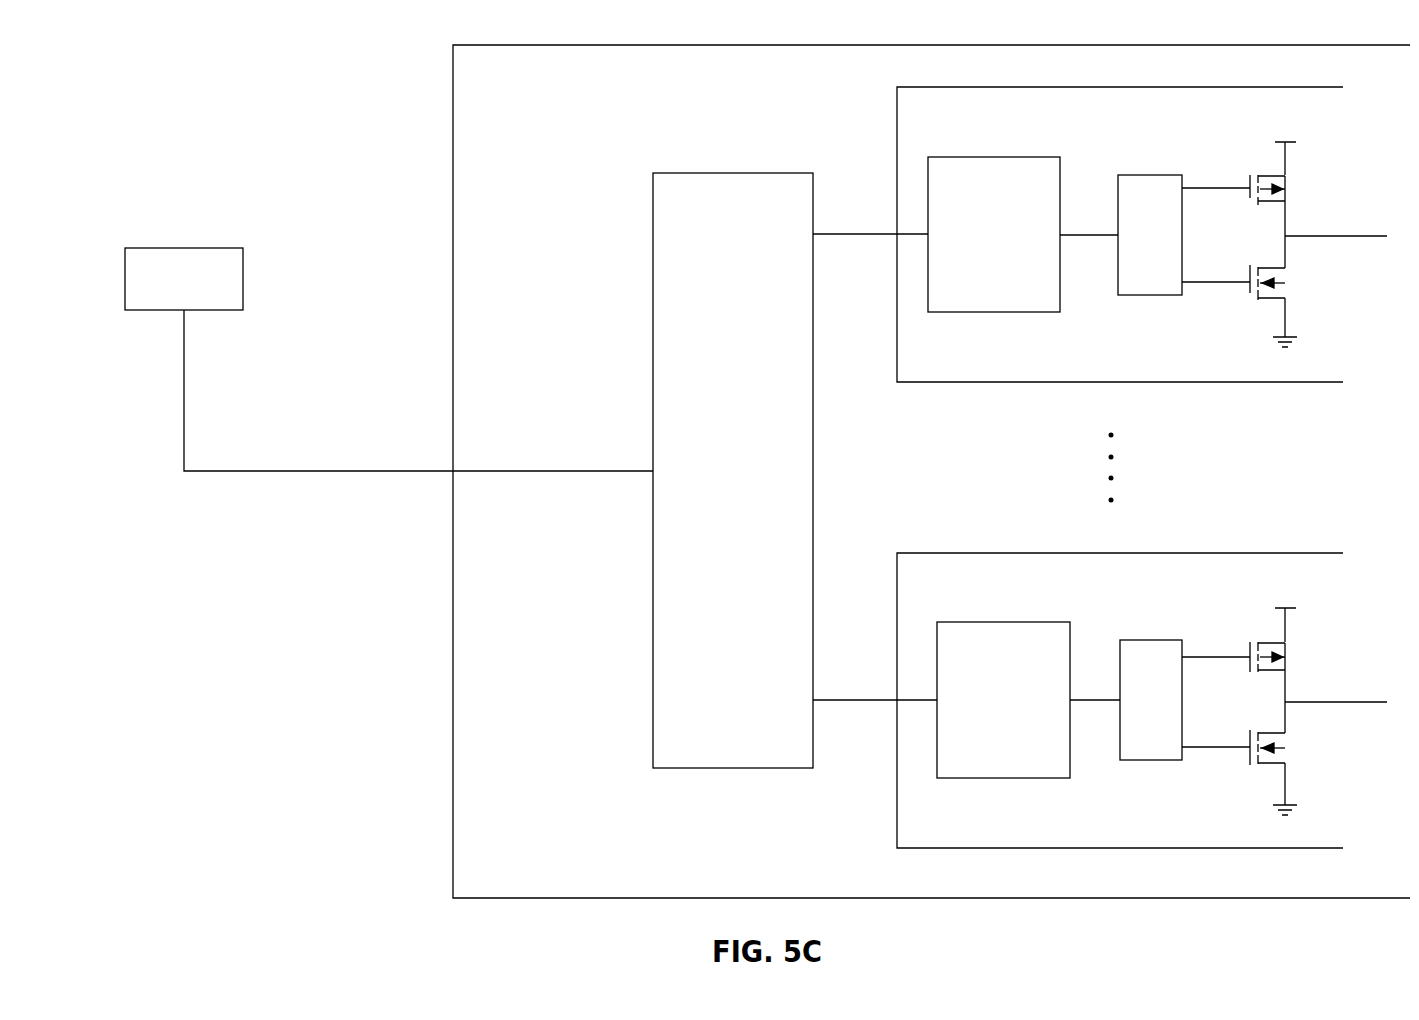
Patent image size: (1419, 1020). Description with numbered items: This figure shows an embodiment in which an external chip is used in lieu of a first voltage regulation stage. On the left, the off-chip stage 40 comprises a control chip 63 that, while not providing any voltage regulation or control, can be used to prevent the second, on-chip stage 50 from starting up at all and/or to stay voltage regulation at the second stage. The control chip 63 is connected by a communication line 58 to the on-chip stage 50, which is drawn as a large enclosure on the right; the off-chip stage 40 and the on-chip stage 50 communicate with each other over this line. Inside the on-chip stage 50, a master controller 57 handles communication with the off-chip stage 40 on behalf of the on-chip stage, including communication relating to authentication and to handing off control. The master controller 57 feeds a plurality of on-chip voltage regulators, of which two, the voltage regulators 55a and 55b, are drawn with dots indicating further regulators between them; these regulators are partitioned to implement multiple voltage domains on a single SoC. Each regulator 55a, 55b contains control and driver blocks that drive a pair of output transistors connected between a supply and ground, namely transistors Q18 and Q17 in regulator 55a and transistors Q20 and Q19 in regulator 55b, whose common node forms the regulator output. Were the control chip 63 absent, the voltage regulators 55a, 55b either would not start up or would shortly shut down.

The off-chip stage 40 is at (222, 192).
The on-chip stage 50 is at (391, 878).
The on-chip voltage regulator 55a is at (1141, 218).
The on-chip voltage regulator 55b is at (1139, 685).
The master controller 57 is at (724, 769).
The communication line 58 is at (304, 472).
The control chip 63 is at (182, 247).
The transistor Q17 is at (1233, 275).
The transistor Q18 is at (1233, 202).
The transistor Q19 is at (1233, 740).
The transistor Q20 is at (1233, 668).